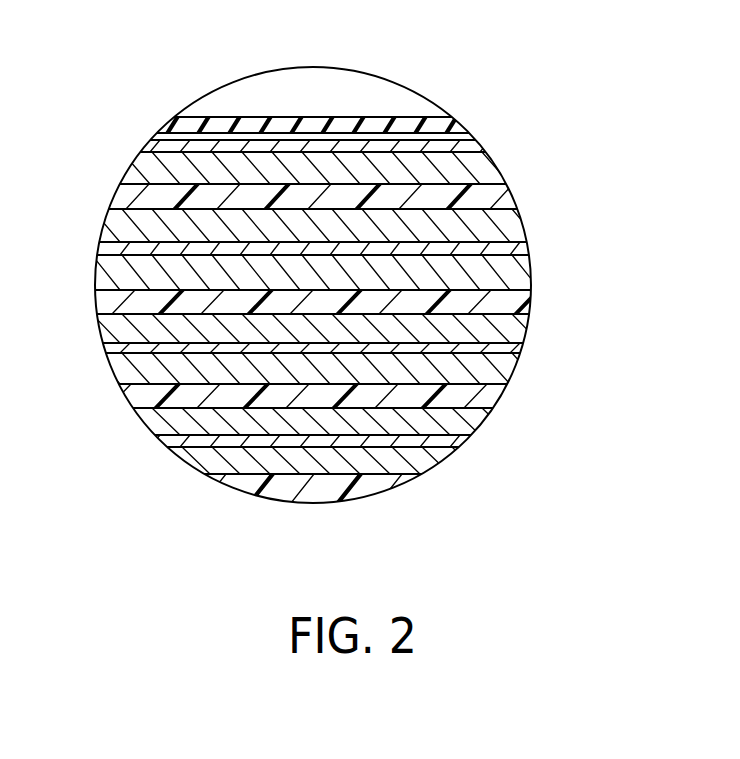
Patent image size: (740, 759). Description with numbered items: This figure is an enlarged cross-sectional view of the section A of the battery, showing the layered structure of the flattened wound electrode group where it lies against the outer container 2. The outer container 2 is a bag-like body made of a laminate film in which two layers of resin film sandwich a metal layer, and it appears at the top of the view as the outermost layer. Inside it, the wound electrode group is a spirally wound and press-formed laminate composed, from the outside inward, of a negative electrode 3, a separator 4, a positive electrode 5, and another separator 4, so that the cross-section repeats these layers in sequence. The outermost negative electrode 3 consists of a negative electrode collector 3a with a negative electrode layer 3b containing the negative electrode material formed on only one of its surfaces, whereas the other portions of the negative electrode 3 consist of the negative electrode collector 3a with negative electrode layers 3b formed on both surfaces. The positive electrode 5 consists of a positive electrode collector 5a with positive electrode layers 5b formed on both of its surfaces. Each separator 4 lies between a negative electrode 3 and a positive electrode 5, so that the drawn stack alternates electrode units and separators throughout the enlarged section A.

The section A is at (209, 104).
The outer container 2 is at (450, 122).
The negative electrode 3 is at (578, 87).
The negative electrode collector 3a is at (477, 145).
The negative electrode layer 3b is at (482, 168).
The separator 4 is at (123, 197).
The positive electrode 5 is at (610, 177).
The positive electrode collector 5a is at (505, 250).
The positive electrode layer 5b is at (502, 217).